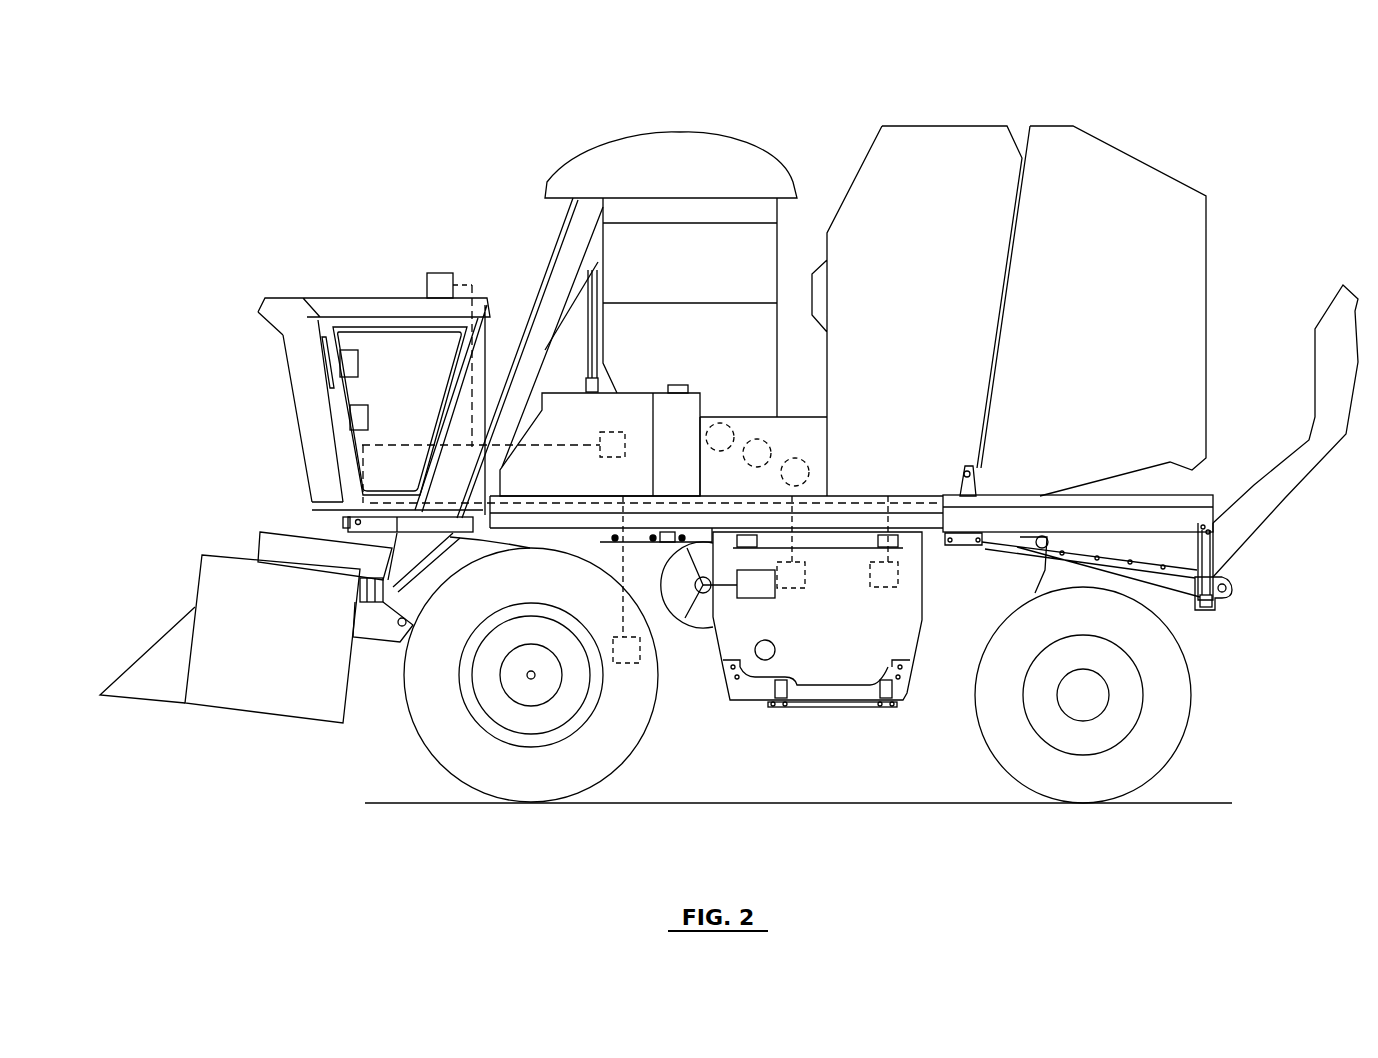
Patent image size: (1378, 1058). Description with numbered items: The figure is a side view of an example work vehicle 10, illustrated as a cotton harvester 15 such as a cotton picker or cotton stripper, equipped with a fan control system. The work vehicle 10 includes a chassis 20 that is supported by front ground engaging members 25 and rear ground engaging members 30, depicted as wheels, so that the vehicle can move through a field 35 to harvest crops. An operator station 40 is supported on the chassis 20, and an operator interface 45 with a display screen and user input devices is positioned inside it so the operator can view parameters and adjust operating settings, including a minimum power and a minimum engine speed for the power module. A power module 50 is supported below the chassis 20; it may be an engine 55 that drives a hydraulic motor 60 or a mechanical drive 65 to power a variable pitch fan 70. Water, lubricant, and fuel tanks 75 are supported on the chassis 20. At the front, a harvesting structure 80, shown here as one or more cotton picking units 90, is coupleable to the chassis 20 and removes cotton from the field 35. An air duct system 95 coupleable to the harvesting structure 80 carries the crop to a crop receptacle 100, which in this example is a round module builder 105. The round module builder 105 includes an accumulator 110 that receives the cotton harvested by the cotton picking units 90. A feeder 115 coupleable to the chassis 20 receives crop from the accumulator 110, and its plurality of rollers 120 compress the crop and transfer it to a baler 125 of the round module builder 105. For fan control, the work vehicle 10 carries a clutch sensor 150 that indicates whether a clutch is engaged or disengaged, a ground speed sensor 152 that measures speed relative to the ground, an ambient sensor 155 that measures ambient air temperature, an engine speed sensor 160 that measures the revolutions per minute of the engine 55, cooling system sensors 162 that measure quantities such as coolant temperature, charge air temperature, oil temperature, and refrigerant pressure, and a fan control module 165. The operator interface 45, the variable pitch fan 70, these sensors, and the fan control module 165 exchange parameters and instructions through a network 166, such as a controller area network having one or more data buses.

The work vehicle 10 is at (440, 217).
The cotton harvester 15 is at (462, 197).
The chassis 20 is at (1186, 524).
The front ground engaging members 25 is at (445, 745).
The rear ground engaging members 30 is at (1160, 757).
The field 35 is at (272, 835).
The operator station 40 is at (333, 303).
The operator interface 45 is at (358, 365).
The power module 50 is at (858, 735).
The engine 55 is at (827, 630).
The hydraulic motor 60 is at (668, 620).
The mechanical drive 65 is at (763, 600).
The variable pitch fan 70 is at (682, 593).
The water, lubricant, and fuel tanks 75 is at (637, 383).
The harvesting structure 80 is at (146, 587).
The cotton picking units 90 is at (212, 695).
The air duct system 95 is at (505, 300).
The crop receptacle 100 is at (795, 70).
The round module builder 105 is at (883, 72).
The accumulator 110 is at (763, 263).
The feeder 115 is at (800, 434).
The rollers 120 is at (815, 466).
The baler 125 is at (1054, 196).
The clutch sensor 150 is at (612, 433).
The ground speed sensor 152 is at (627, 665).
The ambient sensor 155 is at (440, 282).
The engine speed sensor 160 is at (884, 587).
The cooling system sensors 162 is at (805, 588).
The fan control module 165 is at (368, 418).
The network 166 is at (525, 444).